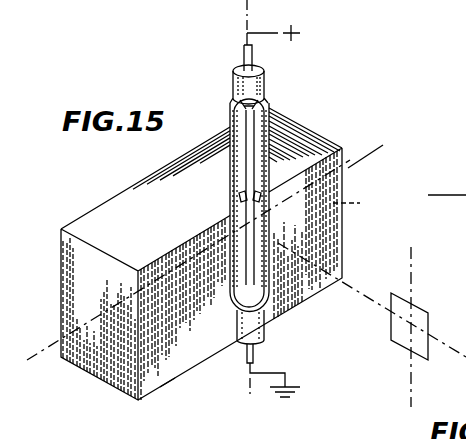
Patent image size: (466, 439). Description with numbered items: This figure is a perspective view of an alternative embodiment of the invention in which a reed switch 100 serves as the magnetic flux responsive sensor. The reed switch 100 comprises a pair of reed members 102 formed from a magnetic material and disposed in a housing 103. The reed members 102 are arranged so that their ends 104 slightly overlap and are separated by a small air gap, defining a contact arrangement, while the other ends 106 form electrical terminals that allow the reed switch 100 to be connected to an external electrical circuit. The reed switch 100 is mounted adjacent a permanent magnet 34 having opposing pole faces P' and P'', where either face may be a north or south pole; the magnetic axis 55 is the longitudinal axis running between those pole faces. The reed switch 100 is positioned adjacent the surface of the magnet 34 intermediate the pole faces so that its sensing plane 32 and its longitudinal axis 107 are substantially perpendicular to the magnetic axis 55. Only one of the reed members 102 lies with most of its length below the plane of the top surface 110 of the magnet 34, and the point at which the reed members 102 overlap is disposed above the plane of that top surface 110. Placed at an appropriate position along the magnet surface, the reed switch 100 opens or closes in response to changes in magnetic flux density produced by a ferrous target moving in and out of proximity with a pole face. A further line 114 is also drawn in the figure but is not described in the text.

The reed switch 100 is at (280, 87).
The reed members 102 is at (255, 142).
The housing 103 is at (238, 313).
The ends 104 is at (262, 200).
The other ends 106 is at (267, 112).
The longitudinal axis 107 is at (245, 8).
The top surface 110 is at (115, 208).
The sensing plane 32 is at (403, 345).
The permanent magnet 34 is at (167, 380).
The magnetic axis 55 is at (382, 152).
The reference line 114 is at (465, 188).